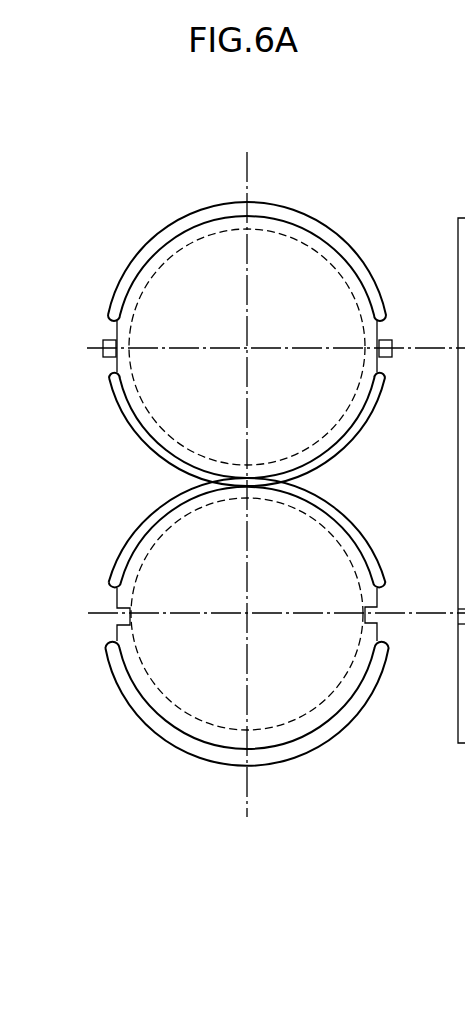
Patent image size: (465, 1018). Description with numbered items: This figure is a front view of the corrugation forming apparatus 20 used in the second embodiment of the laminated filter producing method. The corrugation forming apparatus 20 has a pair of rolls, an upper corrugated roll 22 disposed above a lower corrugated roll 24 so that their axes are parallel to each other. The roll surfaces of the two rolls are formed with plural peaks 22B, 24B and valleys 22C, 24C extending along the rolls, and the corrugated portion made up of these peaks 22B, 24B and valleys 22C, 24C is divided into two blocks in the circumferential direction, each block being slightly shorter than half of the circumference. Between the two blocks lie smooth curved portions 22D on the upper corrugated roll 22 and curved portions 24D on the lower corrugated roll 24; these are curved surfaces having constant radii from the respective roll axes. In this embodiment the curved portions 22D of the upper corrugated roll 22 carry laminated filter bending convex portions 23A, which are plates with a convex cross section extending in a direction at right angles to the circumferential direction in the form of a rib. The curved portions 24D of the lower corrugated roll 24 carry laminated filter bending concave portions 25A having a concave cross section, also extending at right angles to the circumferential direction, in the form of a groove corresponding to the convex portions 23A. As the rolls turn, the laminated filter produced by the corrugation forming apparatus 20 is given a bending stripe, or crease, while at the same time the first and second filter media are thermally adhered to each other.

The corrugation forming apparatus 20 is at (362, 165).
The upper corrugated roll 22 is at (250, 310).
The peaks 22B is at (342, 239).
The valleys 22C is at (348, 274).
The curved portions 22D is at (116, 367).
The laminated filter bending convex portions 23A is at (108, 339).
The lower corrugated roll 24 is at (247, 654).
The peaks 24B is at (350, 511).
The valleys 24C is at (356, 540).
The curved portions 24D is at (113, 642).
The laminated filter bending concave portions 25A is at (116, 607).